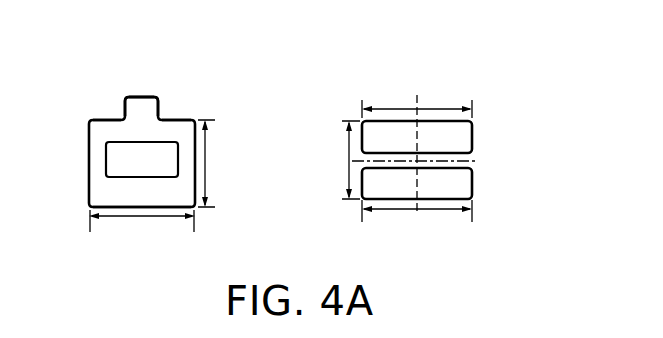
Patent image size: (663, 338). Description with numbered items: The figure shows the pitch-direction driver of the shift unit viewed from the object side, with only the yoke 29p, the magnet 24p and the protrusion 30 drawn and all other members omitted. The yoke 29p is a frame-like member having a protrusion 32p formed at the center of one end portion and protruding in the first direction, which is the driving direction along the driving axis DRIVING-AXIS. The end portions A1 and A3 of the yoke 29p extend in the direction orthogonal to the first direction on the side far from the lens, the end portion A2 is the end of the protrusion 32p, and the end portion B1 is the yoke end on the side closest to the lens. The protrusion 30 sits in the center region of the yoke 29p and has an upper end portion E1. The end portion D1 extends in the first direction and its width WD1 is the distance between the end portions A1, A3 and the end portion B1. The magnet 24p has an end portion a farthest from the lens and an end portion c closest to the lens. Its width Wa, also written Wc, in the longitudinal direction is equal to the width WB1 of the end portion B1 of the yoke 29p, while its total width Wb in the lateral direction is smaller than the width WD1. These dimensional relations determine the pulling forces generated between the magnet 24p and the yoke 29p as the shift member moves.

The yoke 29p is at (183, 178).
The protrusion 30 is at (112, 163).
The protrusion 32p is at (150, 107).
The magnet 24p is at (391, 137).
The end portion A1 is at (104, 120).
The end portion A2 is at (128, 97).
The end portion A3 is at (185, 120).
The end portion E1 is at (167, 140).
The end portion B1 is at (162, 213).
The width WD1 is at (226, 163).
The end portion D1 is at (194, 161).
The width WB1 is at (142, 228).
The width Wa is at (417, 101).
The total width Wb is at (339, 160).
The width Wc is at (417, 215).
The end portion a is at (440, 122).
The end portion c is at (447, 200).
The driving axis DRIVING-AXIS is at (417, 95).